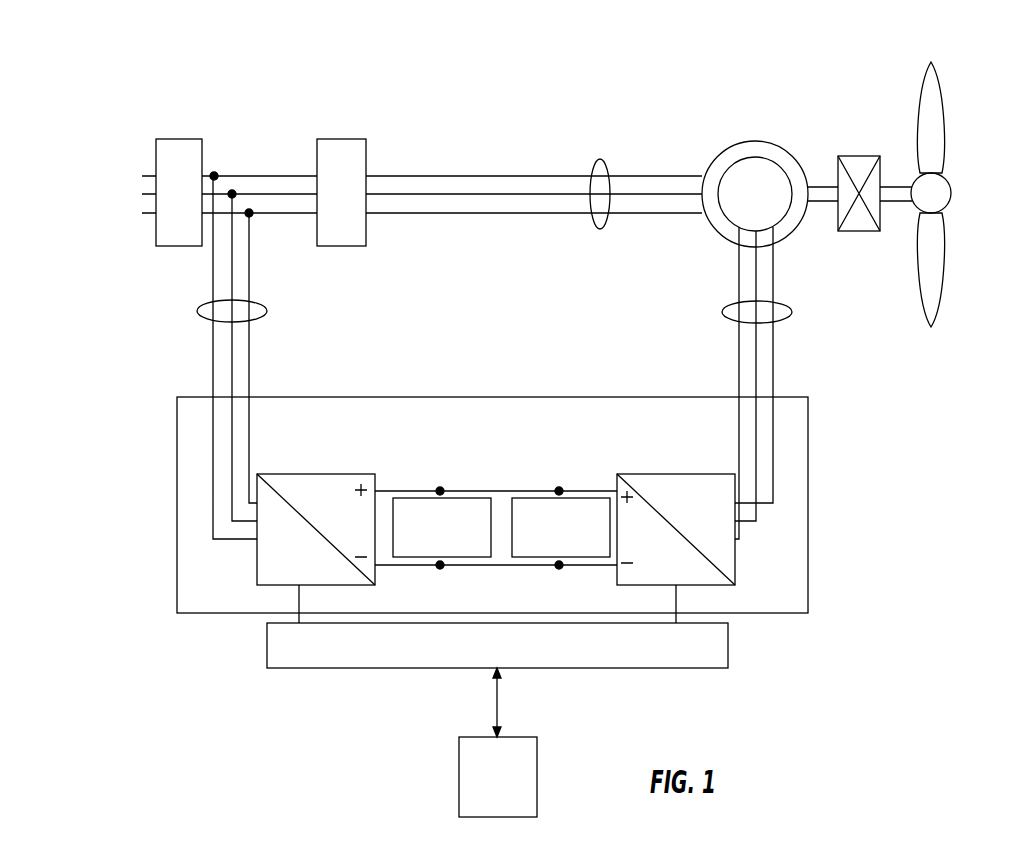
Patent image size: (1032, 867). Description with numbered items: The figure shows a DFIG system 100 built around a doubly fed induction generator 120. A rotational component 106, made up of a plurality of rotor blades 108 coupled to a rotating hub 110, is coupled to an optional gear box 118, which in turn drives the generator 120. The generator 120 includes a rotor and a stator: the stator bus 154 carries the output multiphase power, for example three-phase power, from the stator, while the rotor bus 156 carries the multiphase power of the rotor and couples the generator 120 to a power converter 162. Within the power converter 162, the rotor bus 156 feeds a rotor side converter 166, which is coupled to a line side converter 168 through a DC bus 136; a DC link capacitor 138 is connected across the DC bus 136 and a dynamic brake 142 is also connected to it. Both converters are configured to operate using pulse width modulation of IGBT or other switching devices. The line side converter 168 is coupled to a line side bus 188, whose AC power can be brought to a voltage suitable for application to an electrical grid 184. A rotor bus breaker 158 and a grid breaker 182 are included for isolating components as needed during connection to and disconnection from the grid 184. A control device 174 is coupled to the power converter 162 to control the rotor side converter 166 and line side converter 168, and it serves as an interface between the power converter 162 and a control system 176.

The DFIG system 100 is at (811, 43).
The rotational component 106 is at (958, 178).
The rotor blades 108 is at (943, 128).
The rotating hub 110 is at (951, 193).
The gear box 118 is at (851, 156).
The doubly fed induction generator 120 is at (762, 142).
The DC bus 136 is at (492, 490).
The DC link capacitor 138 is at (594, 490).
The dynamic brake 142 is at (410, 490).
The stator bus 154 is at (605, 160).
The rotor bus 156 is at (721, 311).
The rotor bus breaker 158 is at (337, 138).
The power converter 162 is at (810, 487).
The rotor side converter 166 is at (652, 474).
The line side converter 168 is at (316, 474).
The control device 174 is at (675, 669).
The control system 176 is at (540, 780).
The grid breaker 182 is at (172, 138).
The electrical grid 184 is at (132, 180).
The line side bus 188 is at (267, 313).